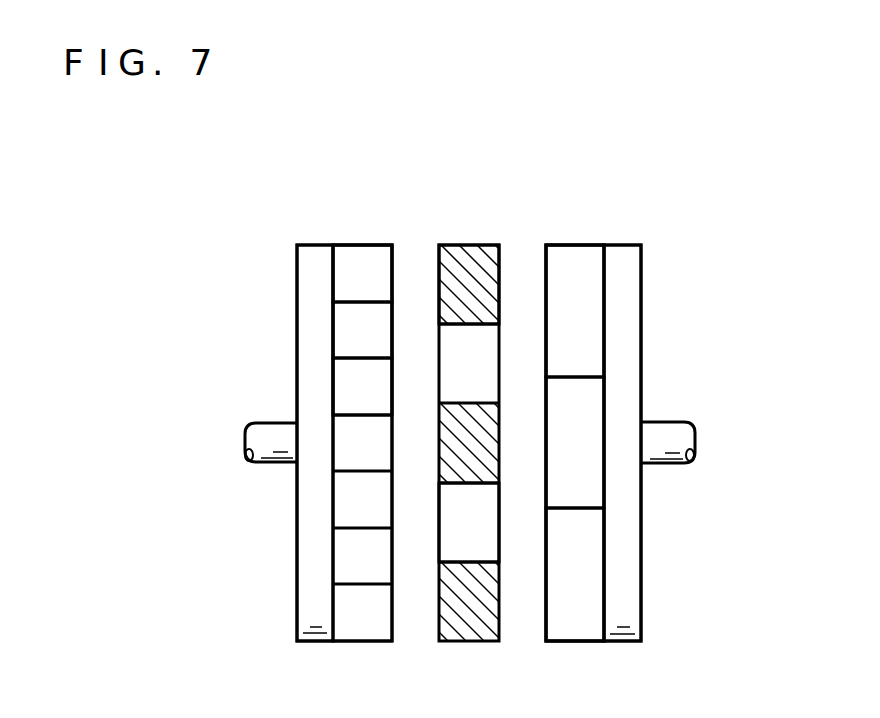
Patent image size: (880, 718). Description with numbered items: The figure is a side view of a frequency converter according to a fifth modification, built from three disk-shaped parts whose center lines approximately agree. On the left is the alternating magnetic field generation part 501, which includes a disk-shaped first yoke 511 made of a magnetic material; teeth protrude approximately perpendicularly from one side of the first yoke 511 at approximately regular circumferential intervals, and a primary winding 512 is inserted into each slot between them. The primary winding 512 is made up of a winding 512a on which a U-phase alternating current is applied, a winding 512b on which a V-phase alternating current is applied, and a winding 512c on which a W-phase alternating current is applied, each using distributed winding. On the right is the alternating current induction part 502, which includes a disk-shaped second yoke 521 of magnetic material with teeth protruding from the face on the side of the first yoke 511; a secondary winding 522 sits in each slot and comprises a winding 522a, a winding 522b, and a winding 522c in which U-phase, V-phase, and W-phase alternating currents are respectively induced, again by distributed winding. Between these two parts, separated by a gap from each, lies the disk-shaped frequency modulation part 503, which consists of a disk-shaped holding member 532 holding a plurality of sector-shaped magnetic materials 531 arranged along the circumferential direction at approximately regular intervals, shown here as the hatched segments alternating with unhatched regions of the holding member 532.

The alternating magnetic field generation part 501 is at (348, 222).
The first yoke 511 is at (305, 265).
The primary winding 512 is at (157, 267).
The winding 512a is at (338, 283).
The winding 512b is at (340, 333).
The winding 512c is at (340, 388).
The frequency modulation part 503 is at (460, 228).
The magnetic material 531 is at (482, 248).
The holding member 532 is at (489, 538).
The alternating current induction part 502 is at (577, 227).
The second yoke 521 is at (630, 270).
The secondary winding 522 is at (758, 287).
The winding 522a is at (590, 315).
The winding 522b is at (590, 412).
The winding 522c is at (595, 581).